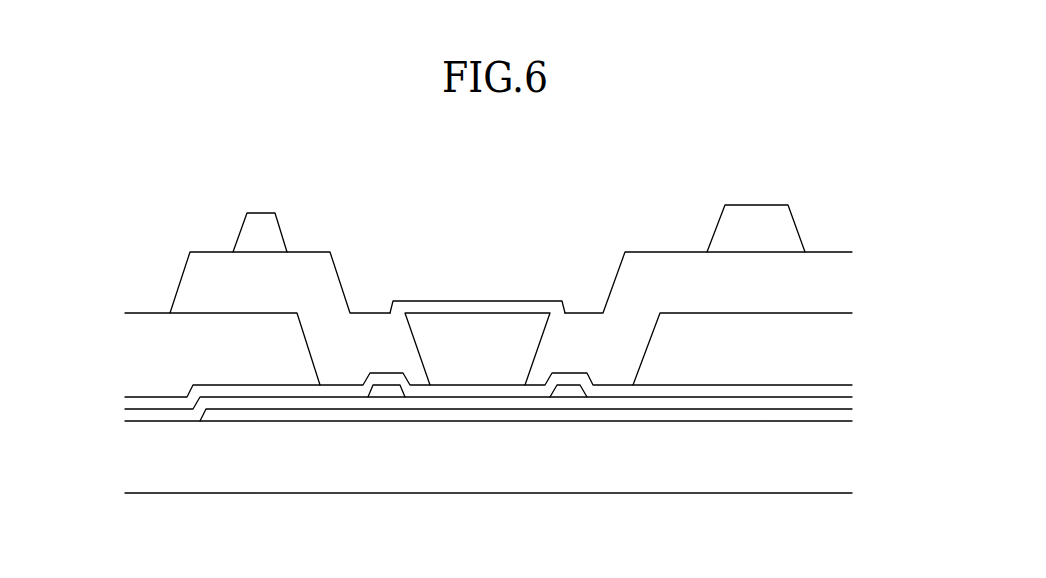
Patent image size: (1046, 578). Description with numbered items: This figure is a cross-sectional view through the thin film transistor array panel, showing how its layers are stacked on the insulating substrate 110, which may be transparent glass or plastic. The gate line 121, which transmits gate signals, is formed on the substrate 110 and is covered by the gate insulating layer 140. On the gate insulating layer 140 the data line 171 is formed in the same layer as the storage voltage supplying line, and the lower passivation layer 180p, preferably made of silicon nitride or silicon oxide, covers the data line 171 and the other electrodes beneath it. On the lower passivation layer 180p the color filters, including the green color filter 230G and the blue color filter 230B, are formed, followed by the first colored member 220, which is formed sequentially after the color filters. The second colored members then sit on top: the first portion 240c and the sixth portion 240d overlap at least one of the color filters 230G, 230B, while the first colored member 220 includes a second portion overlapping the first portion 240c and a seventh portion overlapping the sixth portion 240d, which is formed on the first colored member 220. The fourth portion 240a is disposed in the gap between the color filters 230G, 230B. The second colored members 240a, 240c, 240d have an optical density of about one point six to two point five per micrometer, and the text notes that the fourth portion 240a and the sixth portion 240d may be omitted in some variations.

The insulating substrate 110 is at (263, 473).
The gate line 121 is at (645, 413).
The gate insulating layer 140 is at (765, 403).
The data line 171 is at (387, 390).
The lower passivation layer 180p is at (818, 390).
The green color filter 230G is at (166, 360).
The blue color filter 230B is at (702, 363).
The first colored member 220 is at (308, 268).
The fourth portion of second colored member 240a is at (473, 318).
The first portion of second colored member 240c is at (748, 222).
The sixth portion of second colored member 240d is at (258, 228).